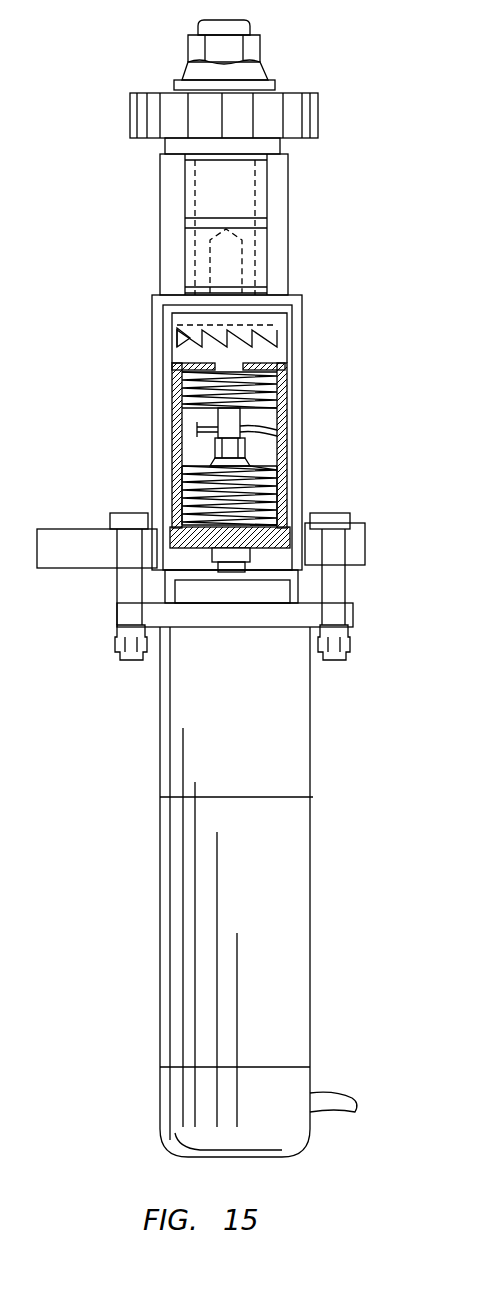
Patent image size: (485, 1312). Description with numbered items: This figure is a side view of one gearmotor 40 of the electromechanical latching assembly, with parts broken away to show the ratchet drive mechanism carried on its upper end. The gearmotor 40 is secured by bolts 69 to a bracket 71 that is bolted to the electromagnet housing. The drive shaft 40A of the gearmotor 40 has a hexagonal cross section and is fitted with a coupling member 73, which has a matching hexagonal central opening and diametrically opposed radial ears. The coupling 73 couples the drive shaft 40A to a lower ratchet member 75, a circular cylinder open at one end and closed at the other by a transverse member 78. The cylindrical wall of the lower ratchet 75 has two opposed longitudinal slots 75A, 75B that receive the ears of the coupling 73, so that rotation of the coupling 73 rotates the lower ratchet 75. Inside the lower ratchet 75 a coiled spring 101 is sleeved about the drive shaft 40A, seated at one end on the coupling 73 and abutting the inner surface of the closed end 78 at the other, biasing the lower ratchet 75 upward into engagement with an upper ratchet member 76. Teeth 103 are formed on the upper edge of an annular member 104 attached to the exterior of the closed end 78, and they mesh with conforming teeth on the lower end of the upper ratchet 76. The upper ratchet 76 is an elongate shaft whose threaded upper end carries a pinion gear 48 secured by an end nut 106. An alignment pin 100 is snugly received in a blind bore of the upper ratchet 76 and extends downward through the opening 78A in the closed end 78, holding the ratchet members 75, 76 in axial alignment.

The end nut 106 is at (255, 50).
The pinion gear 48 is at (128, 117).
The alignment pin 100 is at (235, 262).
The upper ratchet member 76 is at (295, 311).
The teeth 103 is at (176, 332).
The annular member 104 is at (175, 331).
The transverse member 78 is at (198, 400).
The opening 78A is at (243, 354).
The lower ratchet member 75 is at (290, 387).
The drive shaft 40A is at (243, 428).
The coiled spring 101 is at (206, 476).
The slot 75A is at (178, 500).
The slot 75B is at (283, 505).
The coupling member 73 is at (166, 523).
The bracket 71 is at (82, 528).
The bolts 69 is at (127, 617).
The gearmotor 40 is at (158, 888).